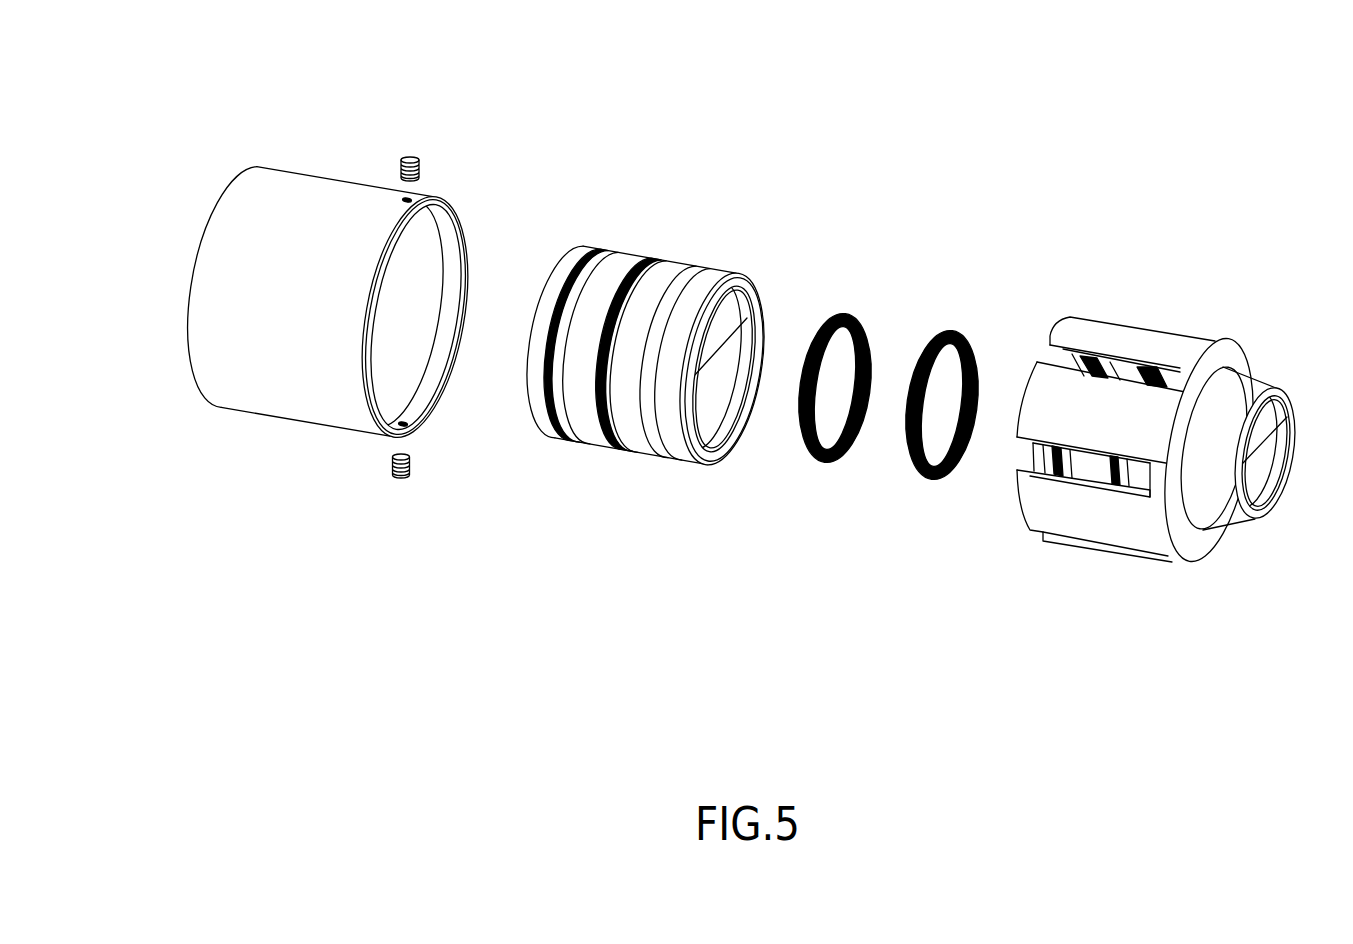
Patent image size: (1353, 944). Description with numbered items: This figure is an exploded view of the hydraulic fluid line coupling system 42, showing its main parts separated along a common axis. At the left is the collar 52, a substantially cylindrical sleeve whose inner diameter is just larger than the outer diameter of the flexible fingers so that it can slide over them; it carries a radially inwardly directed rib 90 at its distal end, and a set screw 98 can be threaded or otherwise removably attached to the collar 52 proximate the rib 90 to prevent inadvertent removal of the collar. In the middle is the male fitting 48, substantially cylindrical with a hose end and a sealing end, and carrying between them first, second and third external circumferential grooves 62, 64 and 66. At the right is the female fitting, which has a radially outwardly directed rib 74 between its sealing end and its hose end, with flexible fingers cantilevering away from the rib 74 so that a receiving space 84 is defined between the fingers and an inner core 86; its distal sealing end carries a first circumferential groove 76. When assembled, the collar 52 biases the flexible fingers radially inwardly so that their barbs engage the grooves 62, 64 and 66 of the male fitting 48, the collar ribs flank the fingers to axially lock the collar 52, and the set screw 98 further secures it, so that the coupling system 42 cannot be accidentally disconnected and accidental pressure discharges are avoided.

The hydraulic fluid line coupling system 42 is at (353, 290).
The male fitting 48 is at (697, 338).
The collar 52 is at (375, 147).
The first external circumferential groove 62 is at (608, 250).
The second external circumferential groove 64 is at (660, 251).
The third external circumferential groove 66 is at (705, 268).
The radially outwardly directed rib 74 is at (1053, 473).
The first circumferential groove 76 is at (1112, 481).
The receiving space 84 is at (1062, 355).
The inner core 86 is at (1262, 523).
The radially inwardly directed rib 90 is at (443, 360).
The set screw 98 is at (418, 158).